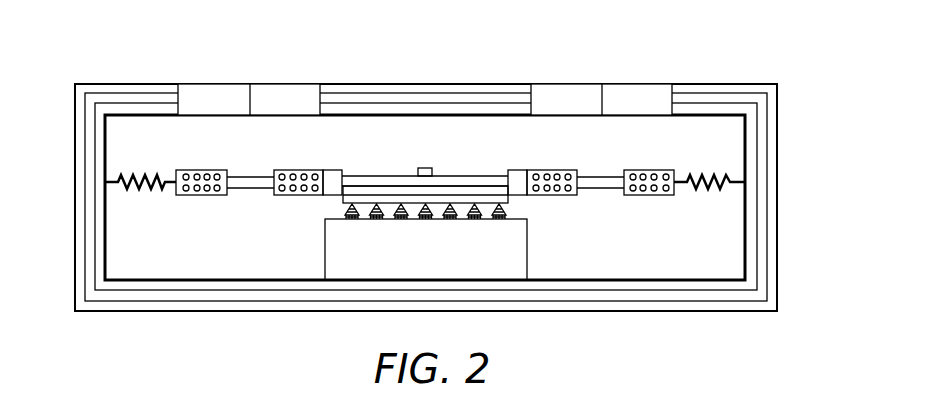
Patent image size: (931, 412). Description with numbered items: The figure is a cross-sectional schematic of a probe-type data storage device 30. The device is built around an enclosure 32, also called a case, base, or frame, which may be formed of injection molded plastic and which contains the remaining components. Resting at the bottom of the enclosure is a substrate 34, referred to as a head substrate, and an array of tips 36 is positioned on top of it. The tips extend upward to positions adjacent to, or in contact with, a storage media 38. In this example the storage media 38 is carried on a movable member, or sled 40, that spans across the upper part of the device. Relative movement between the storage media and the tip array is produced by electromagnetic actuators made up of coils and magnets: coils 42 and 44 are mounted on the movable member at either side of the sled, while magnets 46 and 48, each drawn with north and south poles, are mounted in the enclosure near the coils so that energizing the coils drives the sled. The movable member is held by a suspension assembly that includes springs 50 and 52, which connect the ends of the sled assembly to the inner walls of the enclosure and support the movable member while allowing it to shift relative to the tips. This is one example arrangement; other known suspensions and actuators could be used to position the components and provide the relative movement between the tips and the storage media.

The data storage device 30 is at (461, 168).
The enclosure 32 is at (772, 263).
The substrate 34 is at (348, 260).
The array of tips 36 is at (422, 219).
The storage media 38 is at (398, 198).
The movable member 40 is at (485, 182).
The coil 42 is at (200, 195).
The coil 44 is at (553, 195).
The magnet 46 is at (232, 92).
The magnet 48 is at (617, 92).
The spring 50 is at (145, 175).
The spring 52 is at (710, 175).